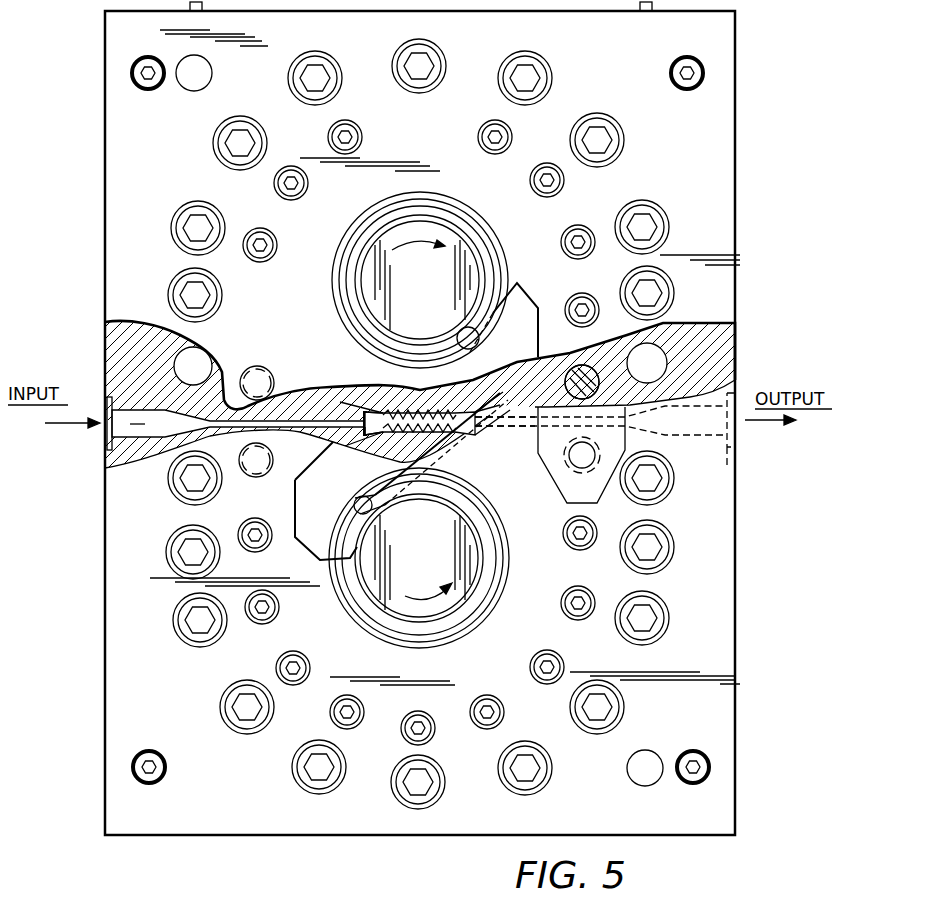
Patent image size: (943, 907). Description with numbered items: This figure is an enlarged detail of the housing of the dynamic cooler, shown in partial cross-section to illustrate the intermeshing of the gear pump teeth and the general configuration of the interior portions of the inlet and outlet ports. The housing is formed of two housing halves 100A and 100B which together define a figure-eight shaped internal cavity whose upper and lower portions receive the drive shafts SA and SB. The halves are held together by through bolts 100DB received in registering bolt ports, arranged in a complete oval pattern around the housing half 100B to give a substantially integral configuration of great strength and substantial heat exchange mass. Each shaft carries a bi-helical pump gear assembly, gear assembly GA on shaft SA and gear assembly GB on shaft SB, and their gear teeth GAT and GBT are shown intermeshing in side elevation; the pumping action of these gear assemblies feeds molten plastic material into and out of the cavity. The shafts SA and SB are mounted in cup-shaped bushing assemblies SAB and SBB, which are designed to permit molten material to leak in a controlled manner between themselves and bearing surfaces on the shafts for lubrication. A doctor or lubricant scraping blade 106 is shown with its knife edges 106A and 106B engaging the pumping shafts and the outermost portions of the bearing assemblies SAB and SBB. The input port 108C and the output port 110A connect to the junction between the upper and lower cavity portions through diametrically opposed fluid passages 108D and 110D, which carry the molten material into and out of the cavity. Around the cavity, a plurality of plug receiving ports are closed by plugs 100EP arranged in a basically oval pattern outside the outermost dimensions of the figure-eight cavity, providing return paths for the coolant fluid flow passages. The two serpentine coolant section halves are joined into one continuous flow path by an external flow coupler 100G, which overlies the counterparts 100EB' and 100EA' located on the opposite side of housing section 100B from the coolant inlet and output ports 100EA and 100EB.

The housing half 100A is at (146, 348).
The housing half 100B is at (170, 166).
The bolts 100DB is at (425, 52).
The plugs 100EP is at (262, 242).
The output port 100EB is at (256, 364).
The counterpart of output port 100EB' is at (577, 334).
The inlet port 100EA is at (261, 476).
The counterpart of inlet port 100EA' is at (544, 465).
The external flow coupler 100G is at (614, 494).
The input port 108C is at (100, 405).
The fluid passage 108D is at (300, 420).
The output port 110A is at (745, 436).
The fluid passage 110D is at (548, 446).
The doctor or lubricant scraping blade 106 is at (378, 482).
The knife edge 106A is at (466, 332).
The knife edge 106B is at (372, 520).
The bi-helical pump gear assembly GA is at (465, 408).
The bi-helical pump gear assembly GB is at (420, 448).
The gear teeth GAT is at (385, 411).
The gear teeth GBT is at (418, 418).
The drive shaft SA is at (447, 281).
The cup-shaped bushing assembly SAB is at (448, 207).
The drive shaft SB is at (450, 571).
The cup-shaped bushing assembly SBB is at (442, 638).